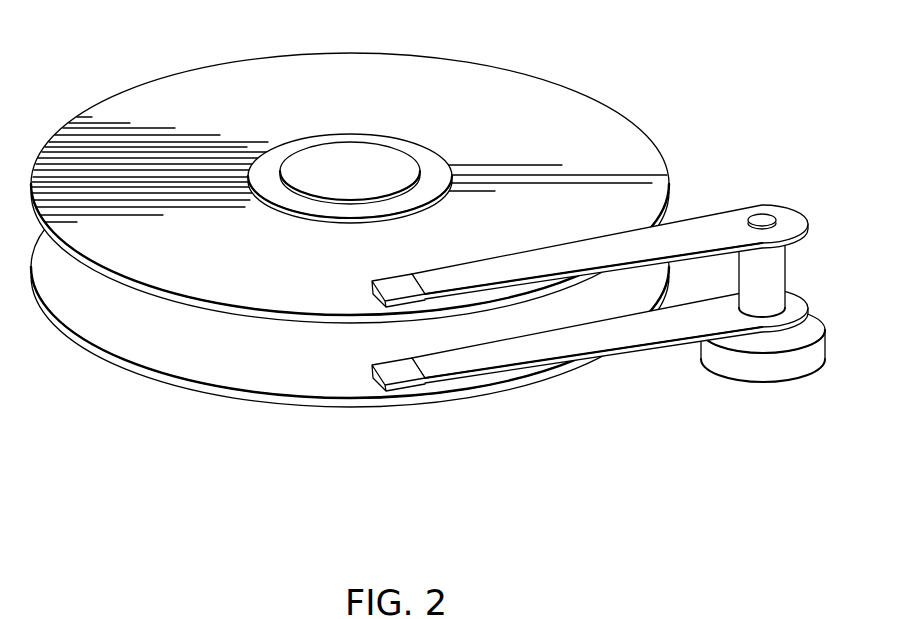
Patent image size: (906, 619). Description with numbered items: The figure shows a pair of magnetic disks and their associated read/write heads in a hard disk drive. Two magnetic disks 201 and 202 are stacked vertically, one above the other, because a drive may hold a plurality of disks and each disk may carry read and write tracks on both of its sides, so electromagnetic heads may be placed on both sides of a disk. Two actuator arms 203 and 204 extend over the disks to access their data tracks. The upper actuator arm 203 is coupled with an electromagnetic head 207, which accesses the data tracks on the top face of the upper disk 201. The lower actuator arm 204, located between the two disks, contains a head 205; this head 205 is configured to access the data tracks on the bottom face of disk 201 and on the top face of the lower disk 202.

The magnetic disk 201 is at (203, 78).
The magnetic disk 202 is at (202, 393).
The actuator arm 203 is at (571, 252).
The actuator arm 204 is at (634, 338).
The head 205 is at (393, 371).
The electromagnetic head 207 is at (393, 287).